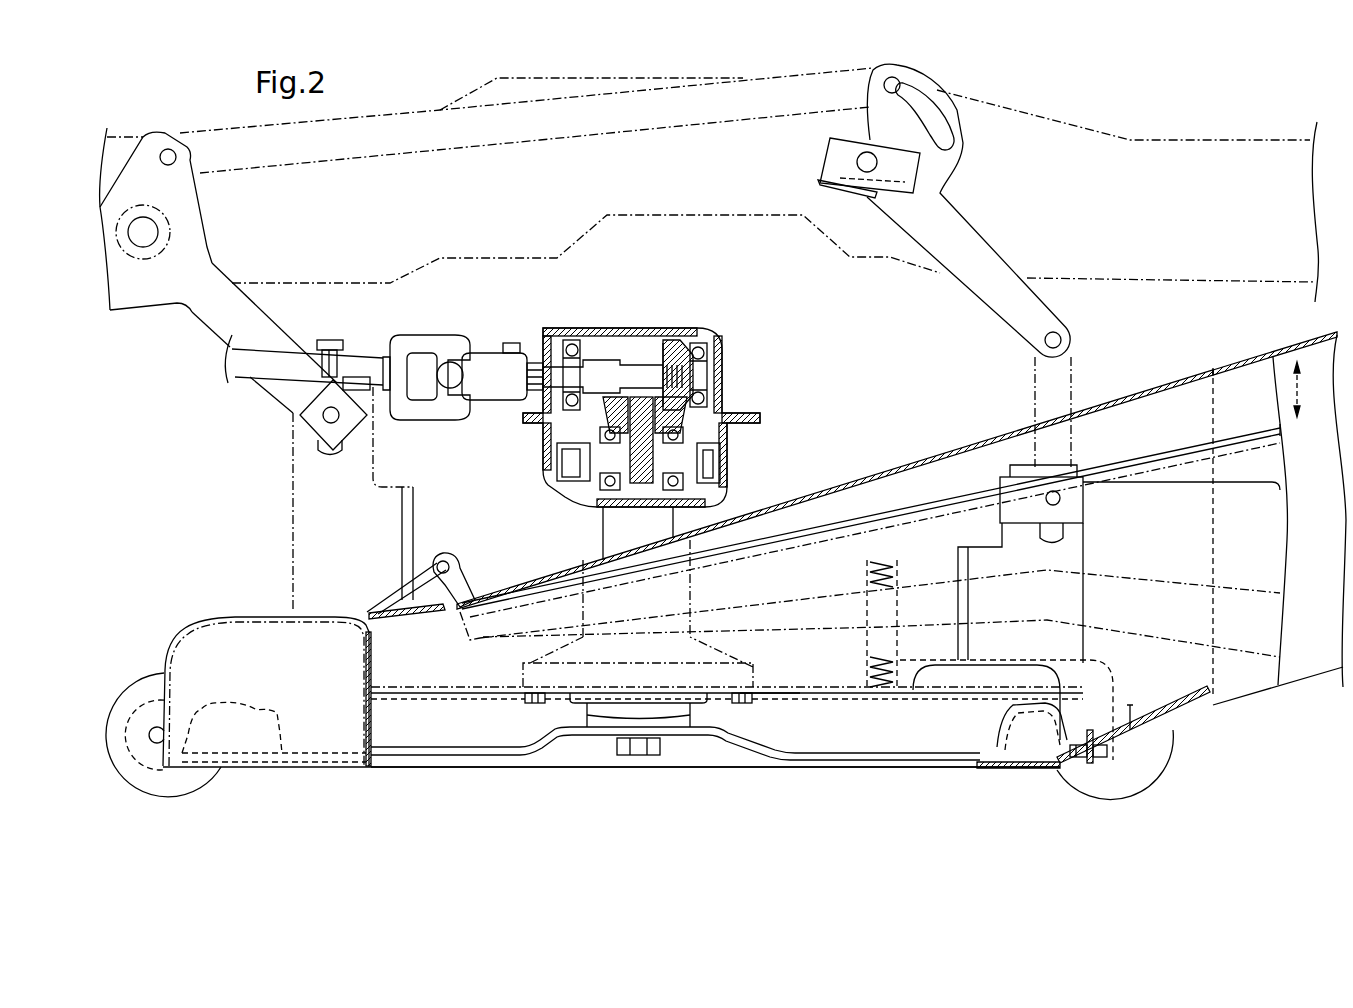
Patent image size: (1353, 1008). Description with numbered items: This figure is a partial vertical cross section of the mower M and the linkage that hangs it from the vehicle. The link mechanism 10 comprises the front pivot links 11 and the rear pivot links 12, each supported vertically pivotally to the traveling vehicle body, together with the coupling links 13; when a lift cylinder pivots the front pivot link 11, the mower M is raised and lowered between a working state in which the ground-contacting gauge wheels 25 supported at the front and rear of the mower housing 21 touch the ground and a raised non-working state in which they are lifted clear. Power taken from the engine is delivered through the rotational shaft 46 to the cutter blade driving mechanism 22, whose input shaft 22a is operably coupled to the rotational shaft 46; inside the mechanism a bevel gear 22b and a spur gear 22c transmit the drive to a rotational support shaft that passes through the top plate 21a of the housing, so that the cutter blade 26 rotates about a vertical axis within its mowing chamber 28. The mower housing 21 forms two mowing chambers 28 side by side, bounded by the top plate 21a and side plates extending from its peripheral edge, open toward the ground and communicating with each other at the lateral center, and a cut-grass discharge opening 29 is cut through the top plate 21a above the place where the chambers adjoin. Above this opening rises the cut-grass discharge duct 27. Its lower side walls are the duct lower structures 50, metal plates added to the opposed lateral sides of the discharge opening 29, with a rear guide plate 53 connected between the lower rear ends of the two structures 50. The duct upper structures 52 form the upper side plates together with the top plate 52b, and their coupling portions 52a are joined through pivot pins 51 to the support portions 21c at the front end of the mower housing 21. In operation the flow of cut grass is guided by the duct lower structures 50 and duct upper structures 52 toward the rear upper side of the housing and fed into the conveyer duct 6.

The conveyer duct 6 is at (1300, 335).
The link mechanism 10 is at (197, 320).
The front pivot link 11 is at (257, 310).
The rear pivot link 12 is at (980, 237).
The coupling link 13 is at (462, 150).
The mower housing 21 is at (240, 611).
The top plate 21a is at (773, 667).
The support portion 21c is at (403, 593).
The cutter blade driving mechanism 22 is at (721, 336).
The input shaft 22a is at (493, 360).
The bevel gear 22b is at (673, 343).
The spur gear 22c is at (707, 463).
The ground-contacting gauge wheel 25 is at (133, 680).
The cutter blade 26 is at (850, 730).
The cut-grass discharge duct 27 is at (877, 456).
The mowing chamber 28 is at (455, 733).
The cut-grass discharge opening 29 is at (514, 612).
The rotational shaft 46 is at (280, 380).
The duct lower structure 50 is at (910, 507).
The pivot pin 51 is at (440, 563).
The duct upper structure 52 is at (1019, 422).
The coupling portion 52a is at (458, 583).
The top plate 52b is at (1170, 387).
The rear guide plate 53 is at (1023, 730).
The mower M is at (648, 816).